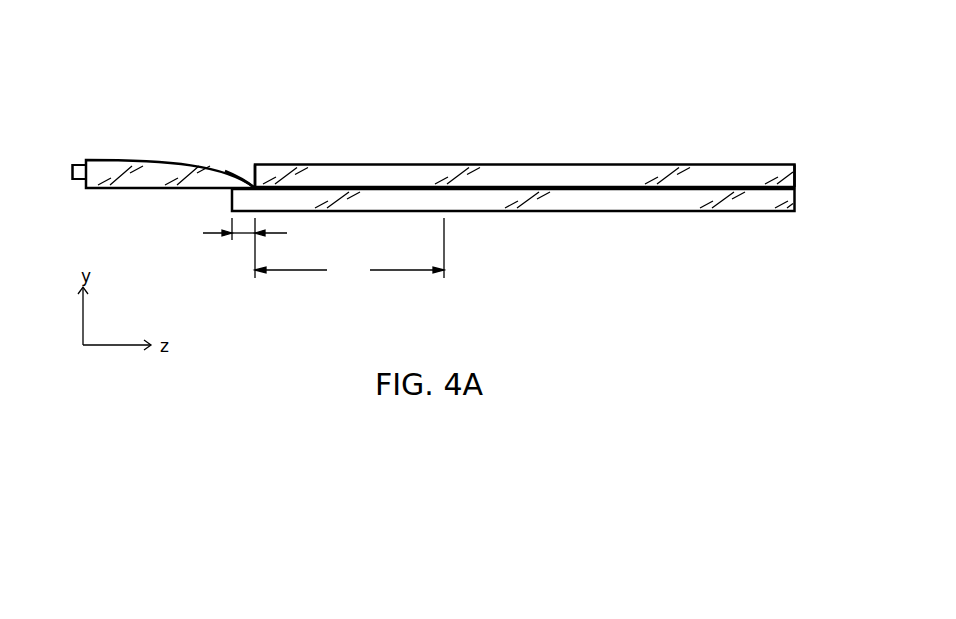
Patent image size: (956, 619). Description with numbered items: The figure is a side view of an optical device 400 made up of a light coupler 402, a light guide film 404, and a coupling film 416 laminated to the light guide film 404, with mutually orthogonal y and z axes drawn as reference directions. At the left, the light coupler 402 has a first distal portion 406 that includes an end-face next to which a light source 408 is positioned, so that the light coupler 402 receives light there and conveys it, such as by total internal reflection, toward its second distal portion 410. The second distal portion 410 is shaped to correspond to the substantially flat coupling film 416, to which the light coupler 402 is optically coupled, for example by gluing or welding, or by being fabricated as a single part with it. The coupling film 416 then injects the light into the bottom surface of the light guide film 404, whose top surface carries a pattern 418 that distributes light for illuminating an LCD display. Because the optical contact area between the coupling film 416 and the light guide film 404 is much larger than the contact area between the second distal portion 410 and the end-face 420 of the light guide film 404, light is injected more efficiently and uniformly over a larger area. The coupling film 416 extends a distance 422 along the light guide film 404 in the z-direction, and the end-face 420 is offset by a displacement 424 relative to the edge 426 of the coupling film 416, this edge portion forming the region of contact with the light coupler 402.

The optical device 400 is at (678, 85).
The light coupler 402 is at (143, 160).
The light guide film 404 is at (795, 173).
The first distal portion 406 is at (83, 182).
The light source 408 is at (79, 163).
The second distal portion 410 is at (253, 186).
The coupling film 416 is at (795, 197).
The pattern 418 is at (388, 165).
The end-face 420 is at (255, 165).
The distance 422 is at (349, 249).
The displacement 424 is at (245, 235).
The edge 426 is at (230, 200).